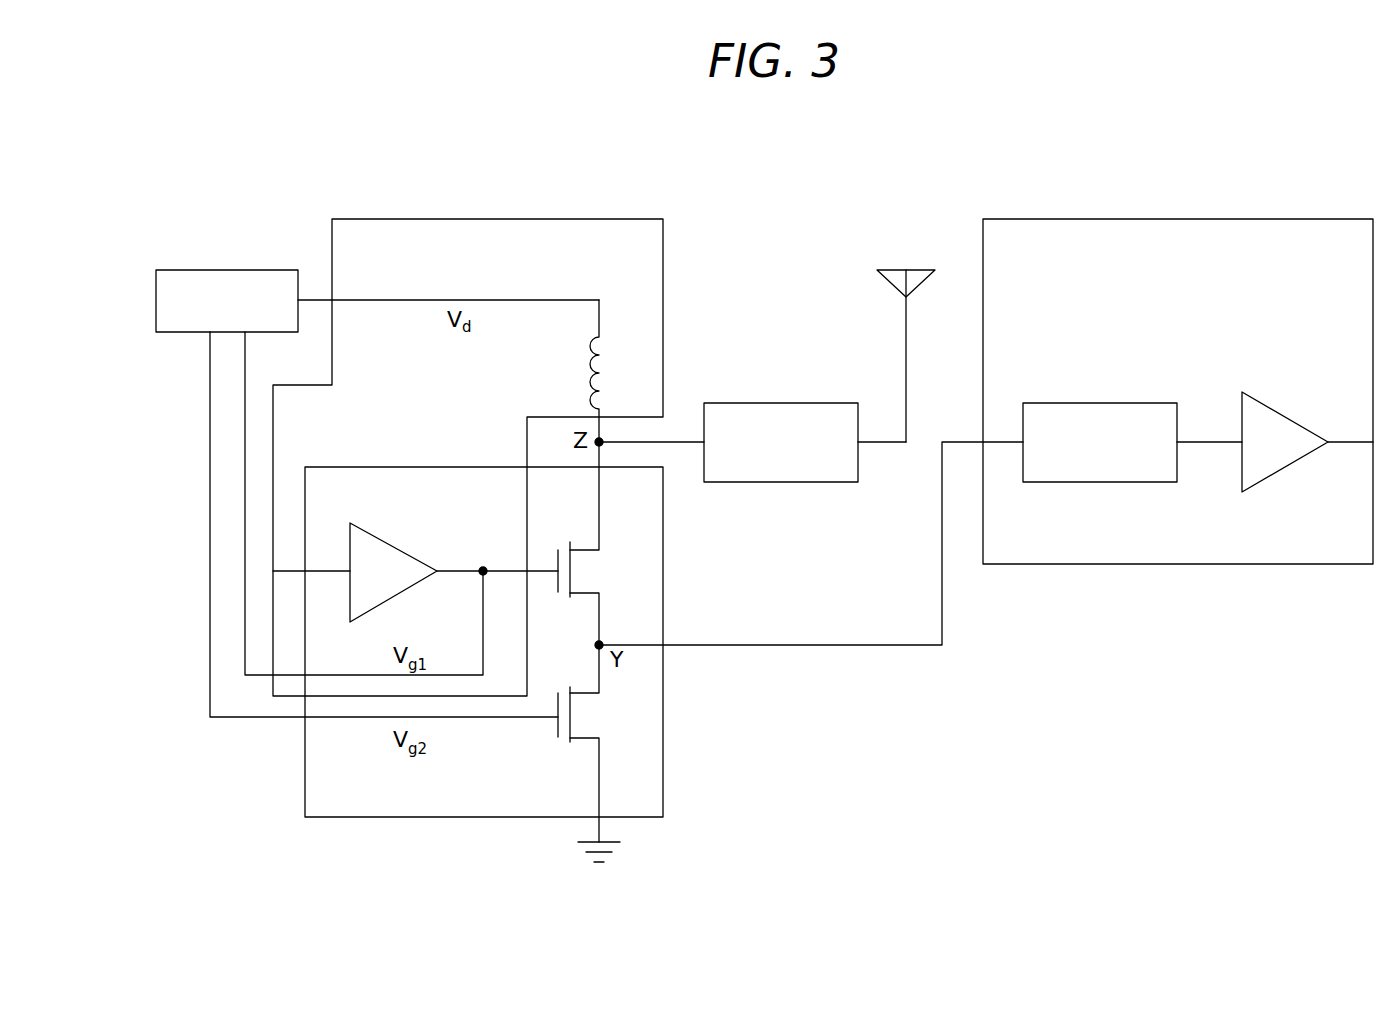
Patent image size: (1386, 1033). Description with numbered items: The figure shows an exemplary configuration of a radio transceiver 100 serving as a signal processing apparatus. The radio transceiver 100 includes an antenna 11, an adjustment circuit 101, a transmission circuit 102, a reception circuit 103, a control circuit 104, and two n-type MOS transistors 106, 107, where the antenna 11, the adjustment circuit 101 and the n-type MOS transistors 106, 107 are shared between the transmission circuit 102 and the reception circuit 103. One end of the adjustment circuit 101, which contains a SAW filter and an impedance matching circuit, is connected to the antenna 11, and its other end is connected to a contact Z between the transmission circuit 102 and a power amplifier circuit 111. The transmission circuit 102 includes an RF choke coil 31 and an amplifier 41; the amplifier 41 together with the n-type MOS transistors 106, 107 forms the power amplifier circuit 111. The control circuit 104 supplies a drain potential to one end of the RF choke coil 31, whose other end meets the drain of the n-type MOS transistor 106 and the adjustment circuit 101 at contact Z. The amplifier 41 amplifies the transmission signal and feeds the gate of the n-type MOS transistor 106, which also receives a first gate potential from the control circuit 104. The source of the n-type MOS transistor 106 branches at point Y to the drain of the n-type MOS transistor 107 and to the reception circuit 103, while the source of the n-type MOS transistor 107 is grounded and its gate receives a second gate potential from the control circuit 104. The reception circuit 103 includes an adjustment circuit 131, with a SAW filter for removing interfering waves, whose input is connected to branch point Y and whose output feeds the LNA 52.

The radio transceiver 100 is at (937, 760).
The transmission circuit 102 is at (497, 218).
The reception circuit 103 is at (1181, 218).
The control circuit 104 is at (229, 268).
The adjustment circuit 101 is at (780, 402).
The adjustment circuit 131 is at (1099, 402).
The power amplifier circuit 111 is at (417, 466).
The amplifier 41 is at (392, 538).
The RF choke coil 31 is at (605, 352).
The n-type MOS transistor 106 is at (582, 598).
The n-type MOS transistor 107 is at (582, 744).
The antenna 11 is at (914, 268).
The LNA 52 is at (1289, 414).